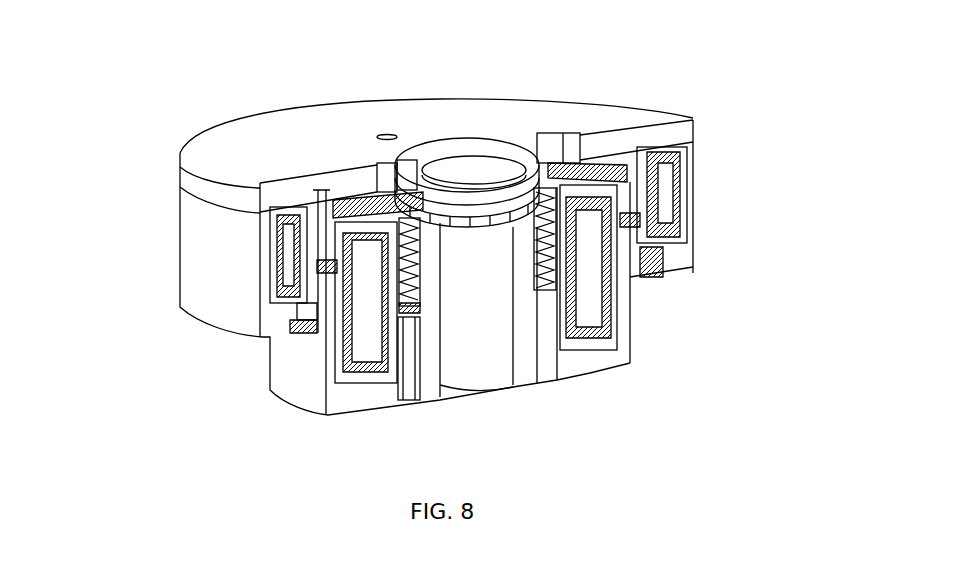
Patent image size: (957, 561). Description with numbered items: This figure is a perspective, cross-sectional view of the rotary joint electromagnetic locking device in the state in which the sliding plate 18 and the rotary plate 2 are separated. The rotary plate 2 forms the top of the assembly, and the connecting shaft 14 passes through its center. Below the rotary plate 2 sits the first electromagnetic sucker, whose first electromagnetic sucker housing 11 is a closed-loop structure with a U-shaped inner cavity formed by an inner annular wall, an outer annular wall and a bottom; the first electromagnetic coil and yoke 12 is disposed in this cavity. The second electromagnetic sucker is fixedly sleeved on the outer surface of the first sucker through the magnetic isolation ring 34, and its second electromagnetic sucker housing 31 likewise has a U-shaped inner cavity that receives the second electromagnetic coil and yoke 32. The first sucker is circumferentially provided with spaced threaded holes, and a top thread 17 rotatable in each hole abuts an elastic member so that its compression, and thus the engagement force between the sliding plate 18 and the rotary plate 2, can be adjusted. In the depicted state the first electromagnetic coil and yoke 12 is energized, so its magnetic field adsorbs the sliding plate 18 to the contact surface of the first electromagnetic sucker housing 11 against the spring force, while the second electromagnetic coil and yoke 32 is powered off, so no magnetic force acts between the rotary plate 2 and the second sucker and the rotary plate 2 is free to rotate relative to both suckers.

The rotary plate 2 is at (230, 157).
The first electromagnetic sucker housing 11 is at (270, 393).
The first electromagnetic coil and yoke 12 is at (613, 316).
The connecting shaft 14 is at (420, 165).
The top thread 17 is at (587, 373).
The sliding plate 18 is at (560, 150).
The second electromagnetic sucker housing 31 is at (192, 262).
The second electromagnetic coil and yoke 32 is at (678, 178).
The magnetic isolation ring 34 is at (653, 237).